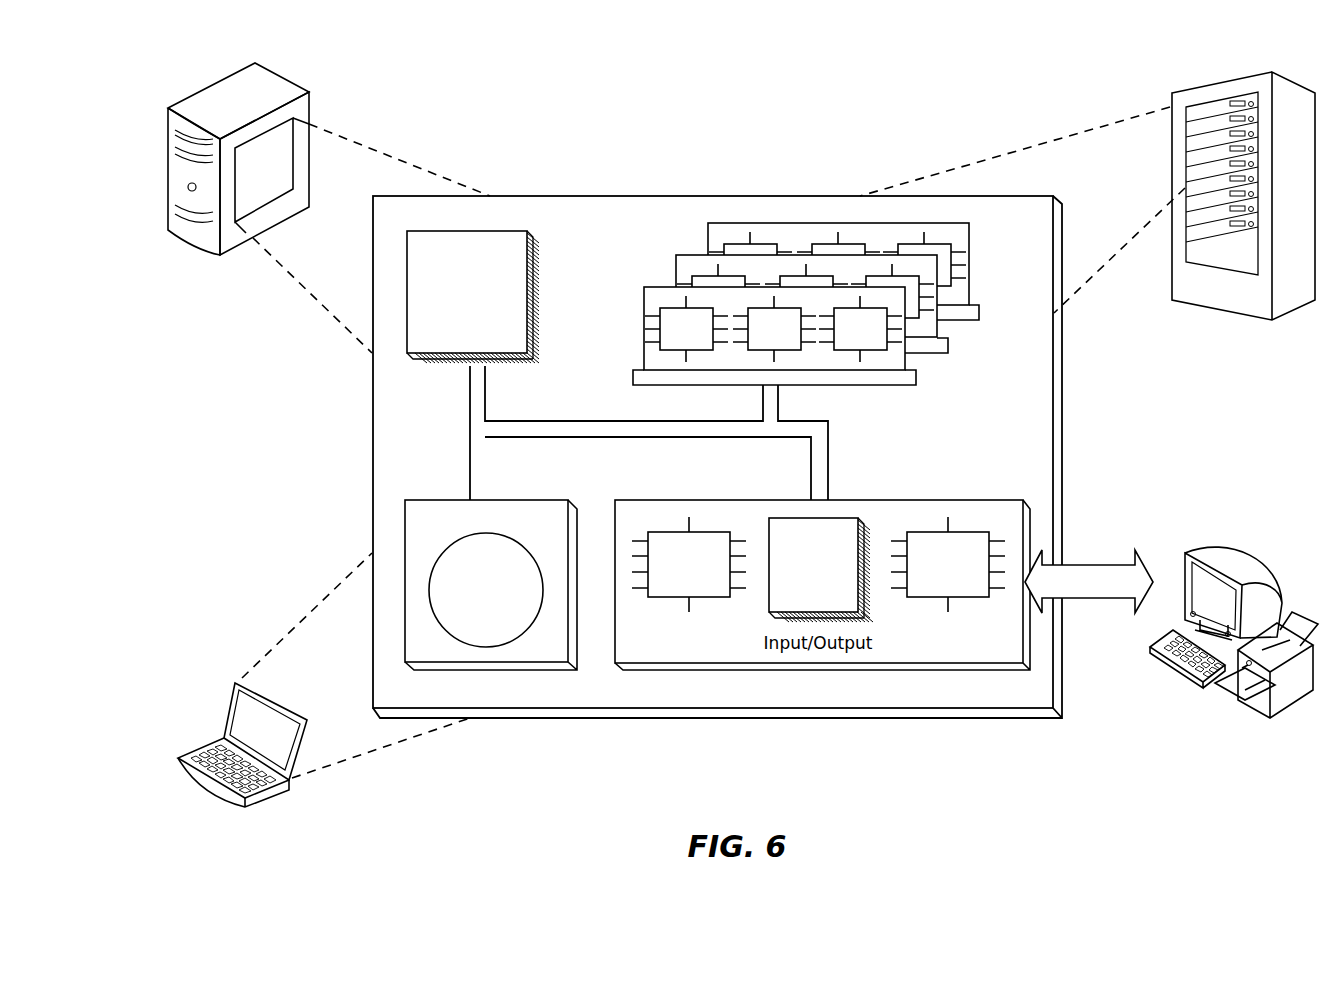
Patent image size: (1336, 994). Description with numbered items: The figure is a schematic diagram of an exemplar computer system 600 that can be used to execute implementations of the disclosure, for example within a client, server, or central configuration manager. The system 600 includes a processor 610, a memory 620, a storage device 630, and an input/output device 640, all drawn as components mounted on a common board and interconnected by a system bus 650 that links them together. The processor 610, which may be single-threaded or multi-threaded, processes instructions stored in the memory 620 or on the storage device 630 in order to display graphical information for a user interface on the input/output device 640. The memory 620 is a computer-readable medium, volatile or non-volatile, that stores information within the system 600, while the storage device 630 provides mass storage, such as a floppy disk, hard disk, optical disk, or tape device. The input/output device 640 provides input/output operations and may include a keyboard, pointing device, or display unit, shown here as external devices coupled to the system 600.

The computer system 600 is at (550, 82).
The processor 610 is at (517, 349).
The memory 620 is at (980, 357).
The storage device 630 is at (528, 652).
The input/output device 640 is at (1185, 553).
The bus 650 is at (647, 437).